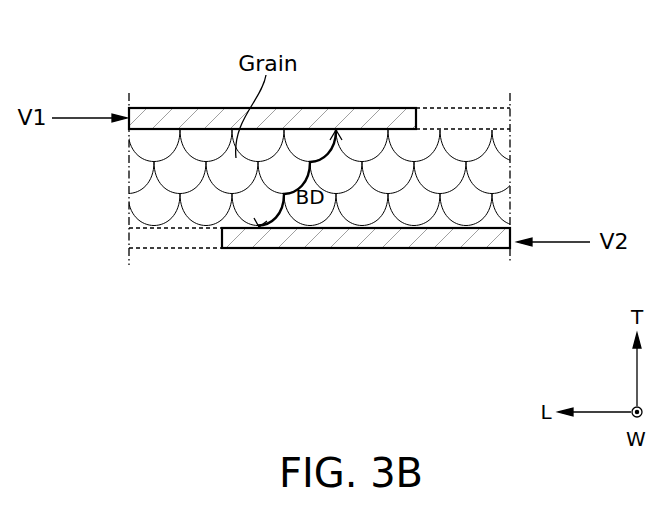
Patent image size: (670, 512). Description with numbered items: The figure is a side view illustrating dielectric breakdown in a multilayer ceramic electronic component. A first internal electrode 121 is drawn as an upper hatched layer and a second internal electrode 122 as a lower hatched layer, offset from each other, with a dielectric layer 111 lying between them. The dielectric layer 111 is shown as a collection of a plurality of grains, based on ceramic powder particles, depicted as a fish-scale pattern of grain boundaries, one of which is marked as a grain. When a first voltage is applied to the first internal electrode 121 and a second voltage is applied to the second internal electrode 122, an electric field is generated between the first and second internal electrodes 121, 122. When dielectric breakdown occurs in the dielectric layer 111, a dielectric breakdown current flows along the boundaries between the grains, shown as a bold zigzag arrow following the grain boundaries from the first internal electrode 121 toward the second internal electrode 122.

The dielectric layer 111 is at (517, 177).
The first internal electrode 121 is at (190, 118).
The second internal electrode 122 is at (464, 240).